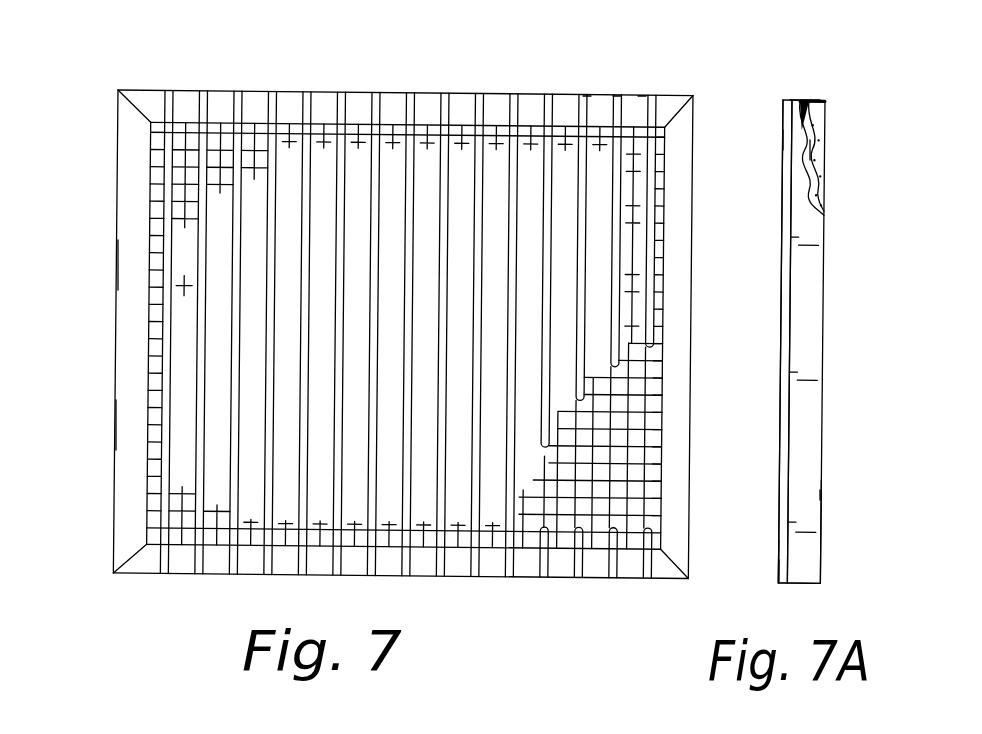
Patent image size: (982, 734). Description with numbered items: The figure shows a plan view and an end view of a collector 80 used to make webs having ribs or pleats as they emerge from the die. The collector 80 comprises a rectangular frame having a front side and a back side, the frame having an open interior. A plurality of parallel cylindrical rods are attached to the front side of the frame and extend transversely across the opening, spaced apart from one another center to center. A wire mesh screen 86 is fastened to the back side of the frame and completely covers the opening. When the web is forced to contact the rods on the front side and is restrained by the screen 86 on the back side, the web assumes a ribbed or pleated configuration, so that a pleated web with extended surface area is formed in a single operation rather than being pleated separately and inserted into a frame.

The collector 80 is at (431, 292).
The wire mesh screen 86 is at (637, 428).